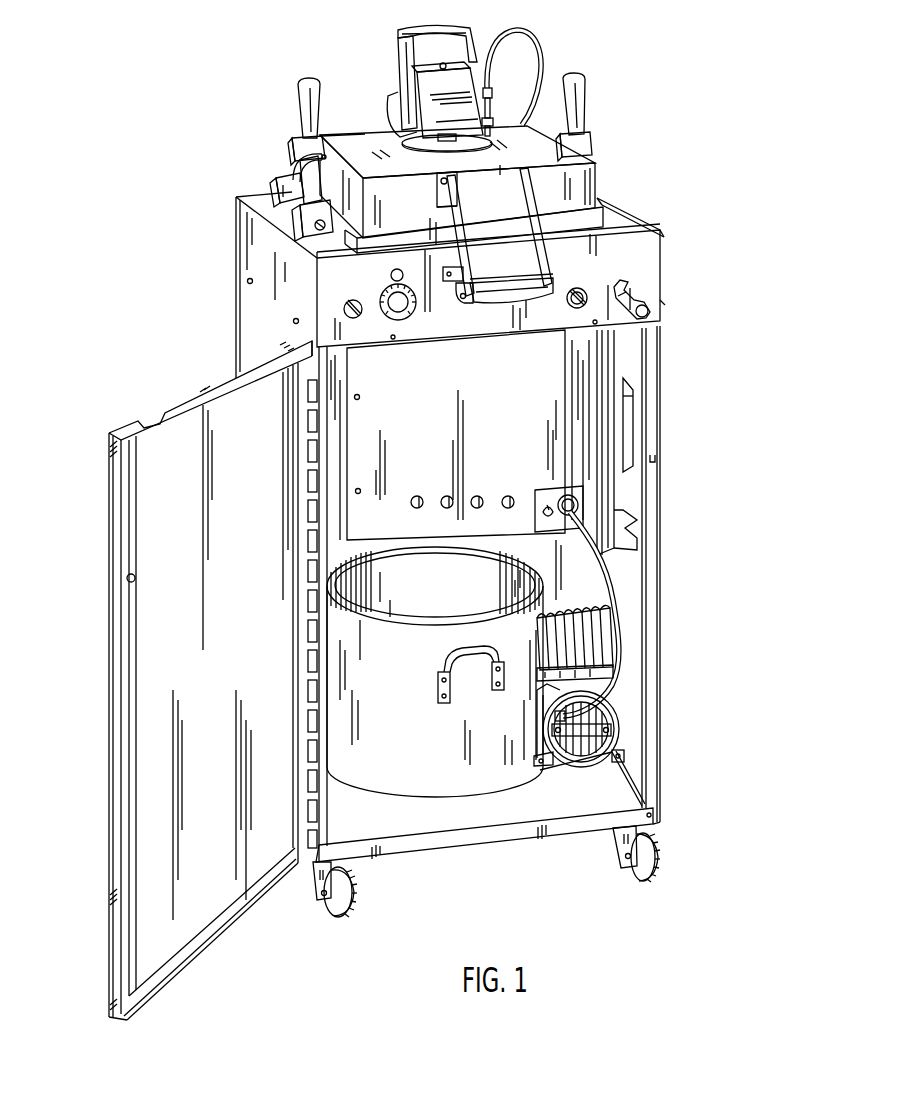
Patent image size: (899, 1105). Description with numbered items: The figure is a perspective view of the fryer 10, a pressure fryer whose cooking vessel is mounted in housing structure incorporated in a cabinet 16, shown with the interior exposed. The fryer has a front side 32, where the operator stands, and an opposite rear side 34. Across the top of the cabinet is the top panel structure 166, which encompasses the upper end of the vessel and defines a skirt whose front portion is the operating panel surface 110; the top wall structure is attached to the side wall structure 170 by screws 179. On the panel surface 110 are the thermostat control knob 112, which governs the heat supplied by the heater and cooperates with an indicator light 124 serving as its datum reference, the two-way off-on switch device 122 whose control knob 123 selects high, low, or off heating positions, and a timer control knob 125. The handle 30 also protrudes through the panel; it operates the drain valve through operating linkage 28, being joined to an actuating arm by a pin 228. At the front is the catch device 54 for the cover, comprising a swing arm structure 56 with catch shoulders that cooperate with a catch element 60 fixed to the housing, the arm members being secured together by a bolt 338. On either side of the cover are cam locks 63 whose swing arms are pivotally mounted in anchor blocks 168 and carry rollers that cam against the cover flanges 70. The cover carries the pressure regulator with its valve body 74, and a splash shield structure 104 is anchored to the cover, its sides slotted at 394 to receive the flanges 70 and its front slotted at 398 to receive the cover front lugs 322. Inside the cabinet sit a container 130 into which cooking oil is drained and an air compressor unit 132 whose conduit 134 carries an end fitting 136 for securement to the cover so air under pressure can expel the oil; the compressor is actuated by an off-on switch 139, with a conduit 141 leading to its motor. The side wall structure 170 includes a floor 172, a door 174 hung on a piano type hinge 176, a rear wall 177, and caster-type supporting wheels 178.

The fryer 10 is at (698, 134).
The cabinet 16 is at (666, 379).
The operating linkage 28 is at (630, 427).
The handle 30 is at (650, 296).
The front side 32 is at (648, 258).
The rear side 34 is at (230, 218).
The catch device 54 is at (575, 188).
The swing arm structure 56 is at (440, 257).
The catch element 60 is at (446, 300).
The cam locks 63 is at (283, 136).
The flanges 70 is at (265, 175).
The valve body 74 is at (465, 100).
The splash shield structure 104 is at (343, 116).
The operating panel surface 110 is at (308, 293).
The thermostat control knob 112 is at (403, 320).
The two-way off-on switch device 122 is at (571, 304).
The control knob 123 is at (579, 308).
The indicator light 124 is at (390, 275).
The control knob 125 is at (344, 320).
The container 130 is at (437, 788).
The air compressor unit 132 is at (581, 780).
The conduit 134 is at (610, 679).
The end fitting 136 is at (492, 110).
The off-on switch 139 is at (552, 489).
The conduit 141 is at (614, 596).
The top panel structure 166 is at (640, 226).
The anchor blocks 168 is at (275, 189).
The side wall structure 170 is at (666, 549).
The floor 172 is at (610, 797).
The door 174 is at (150, 524).
The piano type hinge 176 is at (300, 525).
The rear wall 177 is at (532, 553).
The supporting wheels 178 is at (653, 849).
The screws 179 is at (246, 281).
The pin 228 is at (662, 305).
The cover front lugs 322 is at (434, 190).
The bolt 338 is at (465, 305).
The slot 394 is at (333, 177).
The slot 398 is at (434, 206).